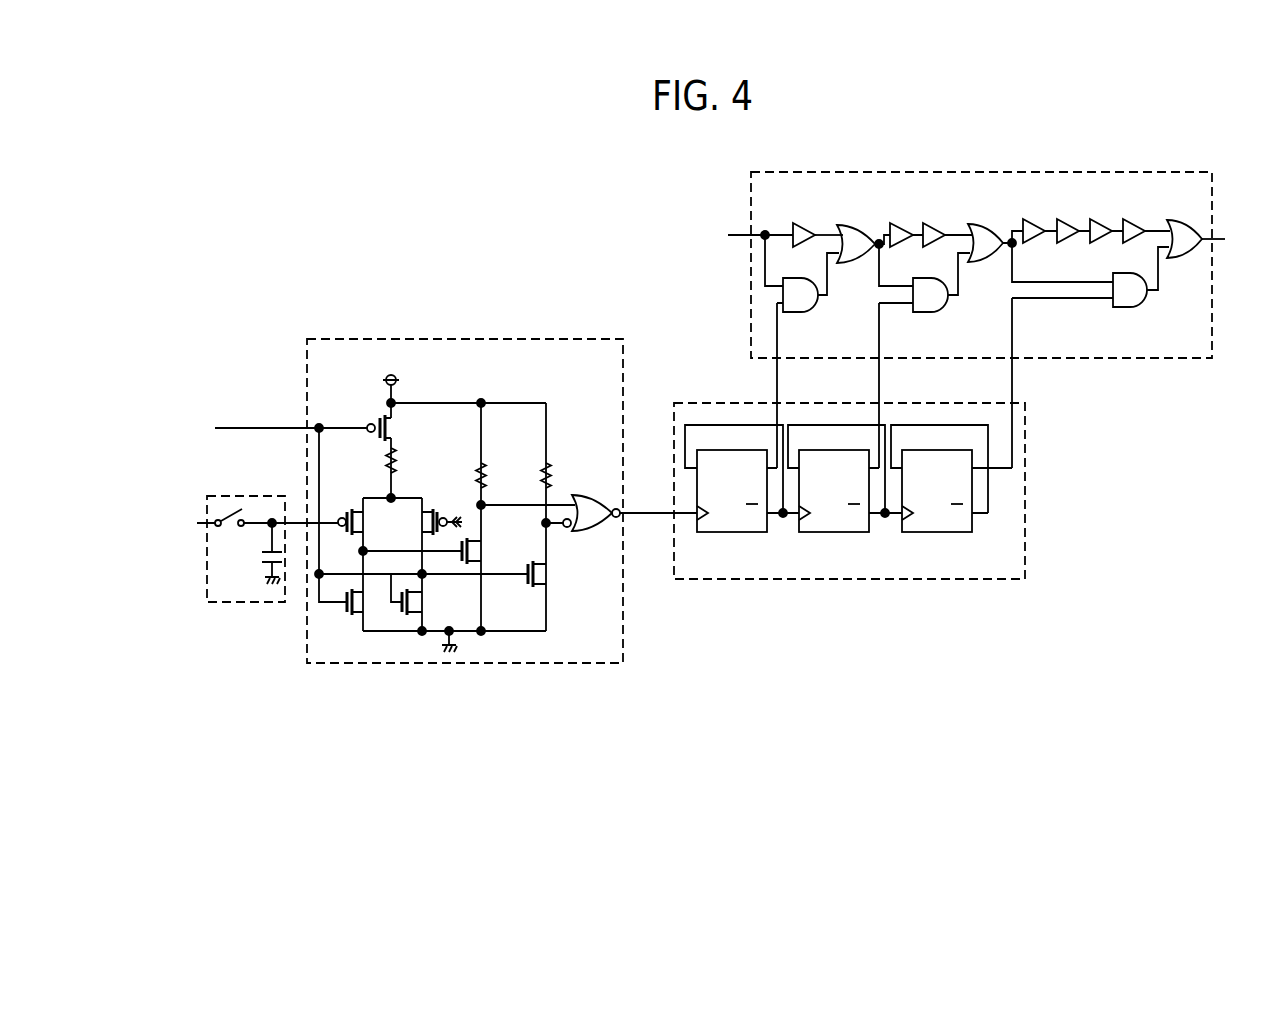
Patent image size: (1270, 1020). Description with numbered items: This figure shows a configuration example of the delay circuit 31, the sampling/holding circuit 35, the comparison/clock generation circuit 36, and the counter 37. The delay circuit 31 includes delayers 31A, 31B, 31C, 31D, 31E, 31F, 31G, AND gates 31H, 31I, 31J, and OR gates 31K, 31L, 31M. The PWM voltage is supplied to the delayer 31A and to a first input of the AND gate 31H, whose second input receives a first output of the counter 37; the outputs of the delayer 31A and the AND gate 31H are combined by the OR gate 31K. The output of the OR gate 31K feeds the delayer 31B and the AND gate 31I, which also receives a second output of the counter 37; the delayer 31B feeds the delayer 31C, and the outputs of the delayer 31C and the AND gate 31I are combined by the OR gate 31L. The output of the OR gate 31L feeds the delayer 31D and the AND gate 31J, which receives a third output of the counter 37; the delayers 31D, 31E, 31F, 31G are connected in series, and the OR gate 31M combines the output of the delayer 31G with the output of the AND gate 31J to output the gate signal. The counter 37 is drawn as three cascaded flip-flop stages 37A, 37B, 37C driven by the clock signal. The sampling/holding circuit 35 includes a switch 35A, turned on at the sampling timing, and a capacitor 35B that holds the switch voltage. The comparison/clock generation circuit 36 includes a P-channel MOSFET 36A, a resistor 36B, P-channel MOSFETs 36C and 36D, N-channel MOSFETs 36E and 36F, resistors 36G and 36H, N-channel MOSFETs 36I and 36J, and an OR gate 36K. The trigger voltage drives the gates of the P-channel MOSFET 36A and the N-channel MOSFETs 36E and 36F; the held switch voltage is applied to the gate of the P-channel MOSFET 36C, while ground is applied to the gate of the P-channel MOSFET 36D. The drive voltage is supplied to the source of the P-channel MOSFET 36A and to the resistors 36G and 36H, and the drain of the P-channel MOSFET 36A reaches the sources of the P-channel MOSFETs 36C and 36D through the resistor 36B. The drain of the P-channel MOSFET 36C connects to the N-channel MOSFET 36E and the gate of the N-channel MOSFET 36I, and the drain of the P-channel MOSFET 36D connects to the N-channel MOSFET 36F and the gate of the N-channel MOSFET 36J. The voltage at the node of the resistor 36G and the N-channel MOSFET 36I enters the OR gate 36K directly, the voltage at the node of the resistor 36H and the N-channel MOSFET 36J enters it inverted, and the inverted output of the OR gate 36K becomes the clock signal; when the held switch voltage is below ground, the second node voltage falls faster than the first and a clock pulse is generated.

The delay circuit 31 is at (975, 172).
The delayer 31A is at (798, 224).
The delayer 31B is at (899, 223).
The delayer 31C is at (932, 247).
The delayer 31D is at (1029, 220).
The delayer 31E is at (1065, 243).
The delayer 31F is at (1097, 220).
The delayer 31G is at (1132, 243).
The AND gate 31H is at (800, 313).
The AND gate 31I is at (930, 313).
The AND gate 31J is at (1130, 308).
The OR gate 31K is at (847, 225).
The OR gate 31L is at (979, 224).
The OR gate 31M is at (1178, 220).
The sampling/holding circuit 35 is at (245, 496).
The switch 35A is at (230, 527).
The capacitor 35B is at (258, 566).
The comparison/clock generation circuit 36 is at (458, 339).
The P-channel MOSFET 36A is at (408, 428).
The resistor 36B is at (419, 460).
The P-channel MOSFET 36C is at (349, 507).
The P-channel MOSFET 36D is at (436, 507).
The N-channel MOSFET 36E is at (349, 620).
The N-channel MOSFET 36F is at (439, 602).
The resistor 36G is at (509, 475).
The resistor 36H is at (574, 475).
The N-channel MOSFET 36I is at (496, 550).
The N-channel MOSFET 36J is at (561, 574).
The OR gate 36K is at (590, 532).
The counter 37 is at (845, 580).
The flip-flop 37A is at (731, 533).
The flip-flop 37B is at (834, 533).
The flip-flop 37C is at (939, 533).